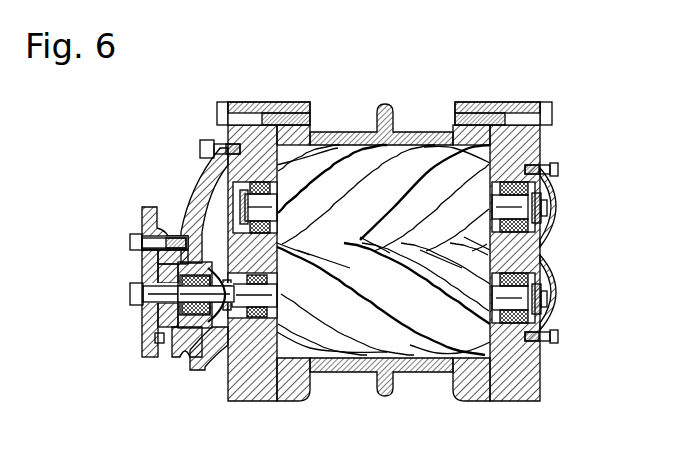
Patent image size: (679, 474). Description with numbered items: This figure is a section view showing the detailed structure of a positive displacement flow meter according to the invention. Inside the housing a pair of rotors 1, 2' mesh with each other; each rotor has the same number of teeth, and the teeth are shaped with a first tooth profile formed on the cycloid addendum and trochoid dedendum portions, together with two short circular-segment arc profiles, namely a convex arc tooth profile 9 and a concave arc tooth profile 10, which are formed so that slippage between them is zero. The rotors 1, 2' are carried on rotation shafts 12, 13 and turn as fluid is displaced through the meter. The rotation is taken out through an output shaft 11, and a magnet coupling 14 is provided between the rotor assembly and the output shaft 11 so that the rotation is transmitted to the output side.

The rotor 1 is at (373, 180).
The rotor 2' is at (383, 337).
The convex arc tooth profile 9 is at (394, 182).
The concave arc tooth profile 10 is at (300, 160).
The output shaft 11 is at (145, 306).
The rotation shaft 12 is at (243, 196).
The rotation shaft 13 is at (548, 272).
The magnet coupling 14 is at (170, 352).